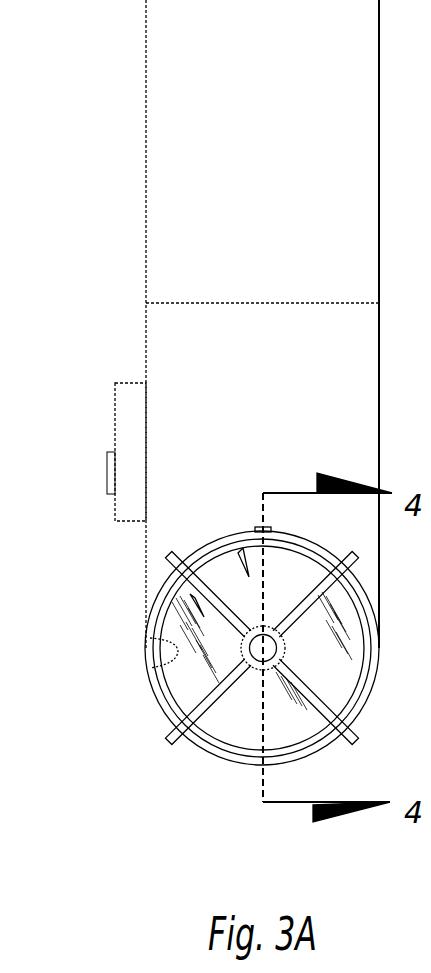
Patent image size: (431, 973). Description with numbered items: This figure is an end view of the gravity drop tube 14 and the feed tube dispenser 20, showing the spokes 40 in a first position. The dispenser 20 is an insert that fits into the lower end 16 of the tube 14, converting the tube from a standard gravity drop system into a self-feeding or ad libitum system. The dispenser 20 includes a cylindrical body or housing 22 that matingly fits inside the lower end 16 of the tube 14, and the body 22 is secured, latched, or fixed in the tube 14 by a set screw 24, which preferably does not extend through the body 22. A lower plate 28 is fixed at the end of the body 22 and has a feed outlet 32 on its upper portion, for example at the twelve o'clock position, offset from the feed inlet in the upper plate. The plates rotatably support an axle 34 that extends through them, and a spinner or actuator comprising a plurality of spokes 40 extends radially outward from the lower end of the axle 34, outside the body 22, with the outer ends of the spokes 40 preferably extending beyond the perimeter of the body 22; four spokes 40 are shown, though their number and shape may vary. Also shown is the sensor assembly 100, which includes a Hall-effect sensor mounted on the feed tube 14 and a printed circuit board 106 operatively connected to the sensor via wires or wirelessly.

The gravity drop tube 14 is at (150, 358).
The sensor assembly 100 is at (110, 400).
The printed circuit board (PCB) 106 is at (107, 460).
The set screw 24 is at (262, 527).
The feed outlet 32 is at (232, 548).
The lower end 16 is at (292, 758).
The spokes 40 is at (168, 553).
The axle 34 is at (270, 648).
The feed tube dispenser 20 is at (190, 596).
The cylindrical body or housing 22 is at (160, 655).
The lower plate 28 is at (352, 632).